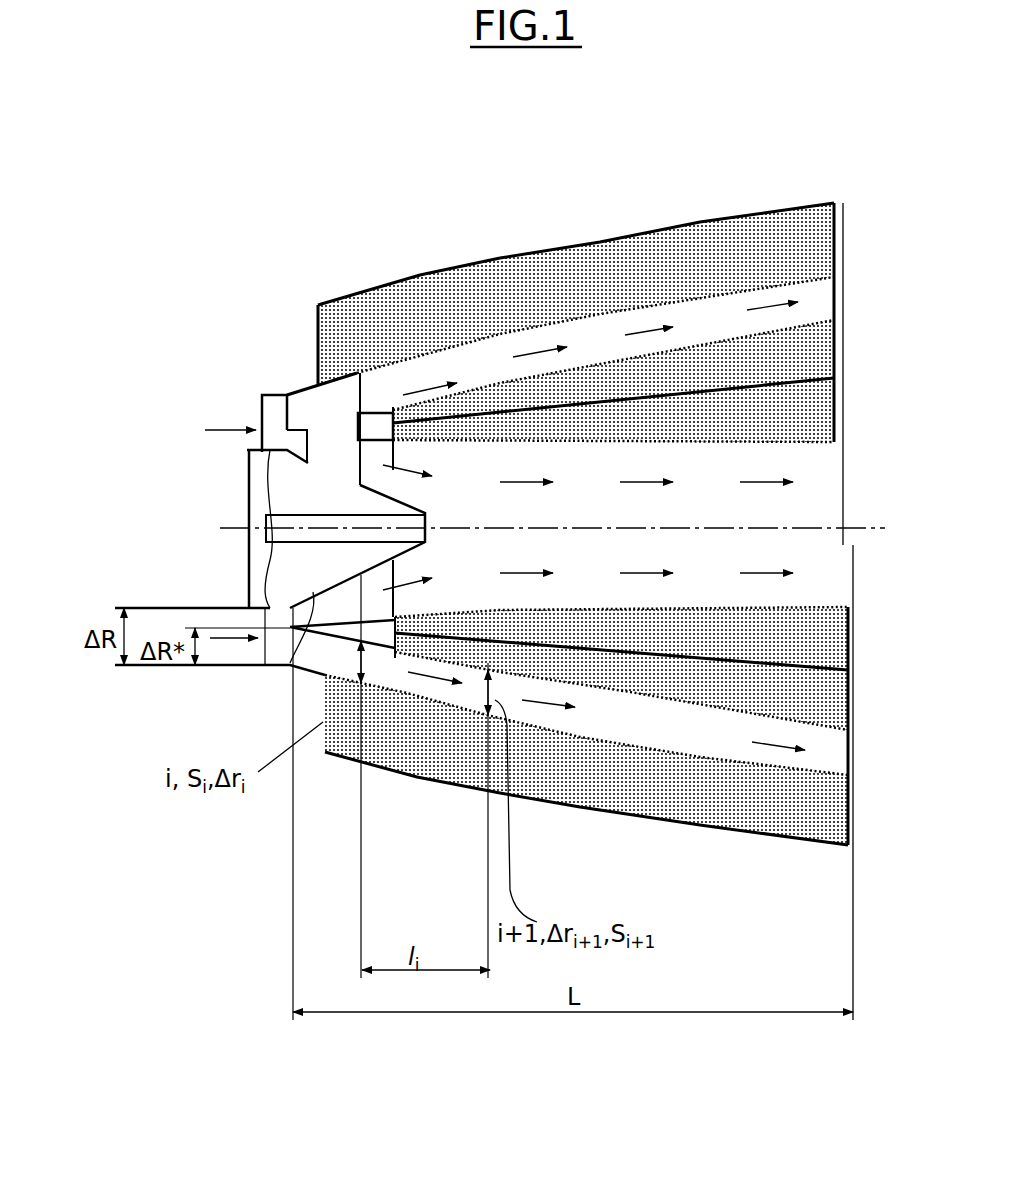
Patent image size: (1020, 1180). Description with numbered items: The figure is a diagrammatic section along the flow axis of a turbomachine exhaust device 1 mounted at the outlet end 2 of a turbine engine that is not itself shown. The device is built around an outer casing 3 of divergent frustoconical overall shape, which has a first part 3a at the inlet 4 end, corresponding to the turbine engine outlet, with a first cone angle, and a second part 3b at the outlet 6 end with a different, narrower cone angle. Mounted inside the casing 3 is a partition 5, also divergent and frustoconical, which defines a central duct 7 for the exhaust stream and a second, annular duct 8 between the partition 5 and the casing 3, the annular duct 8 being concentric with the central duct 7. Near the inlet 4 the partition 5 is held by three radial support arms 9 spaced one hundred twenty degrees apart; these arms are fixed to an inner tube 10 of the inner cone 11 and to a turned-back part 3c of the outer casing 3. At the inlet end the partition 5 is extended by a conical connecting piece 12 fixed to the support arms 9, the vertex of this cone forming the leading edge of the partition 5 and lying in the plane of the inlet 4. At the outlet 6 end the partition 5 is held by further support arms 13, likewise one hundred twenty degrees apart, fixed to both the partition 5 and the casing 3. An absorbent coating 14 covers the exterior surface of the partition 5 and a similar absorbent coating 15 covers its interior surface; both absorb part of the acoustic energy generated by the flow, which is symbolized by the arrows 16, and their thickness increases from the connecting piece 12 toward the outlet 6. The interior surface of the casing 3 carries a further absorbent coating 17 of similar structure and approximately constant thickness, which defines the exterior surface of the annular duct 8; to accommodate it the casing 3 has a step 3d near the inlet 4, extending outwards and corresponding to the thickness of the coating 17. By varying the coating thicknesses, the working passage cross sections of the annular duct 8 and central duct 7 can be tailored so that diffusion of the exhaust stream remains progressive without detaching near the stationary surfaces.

The turbomachine exhaust device 1 is at (757, 168).
The outlet end 2 is at (282, 397).
The outer casing 3 is at (497, 255).
The first part 3a is at (377, 420).
The second part 3b is at (535, 250).
The turned-back part 3c is at (312, 388).
The step 3d is at (317, 320).
The inlet 4 is at (275, 415).
The partition 5 is at (584, 400).
The outlet 6 is at (847, 490).
The central duct 7 is at (625, 460).
The annular duct 8 is at (707, 317).
The radial support arms 9 is at (327, 433).
The inner tube 10 is at (280, 527).
The inner cone 11 is at (290, 662).
The conical connecting piece 12 is at (362, 350).
The support arms 13 is at (838, 328).
The absorbent coating 14 is at (800, 352).
The absorbent coating 15 is at (800, 407).
The arrows 16 is at (430, 372).
The absorbent coating 17 is at (800, 236).